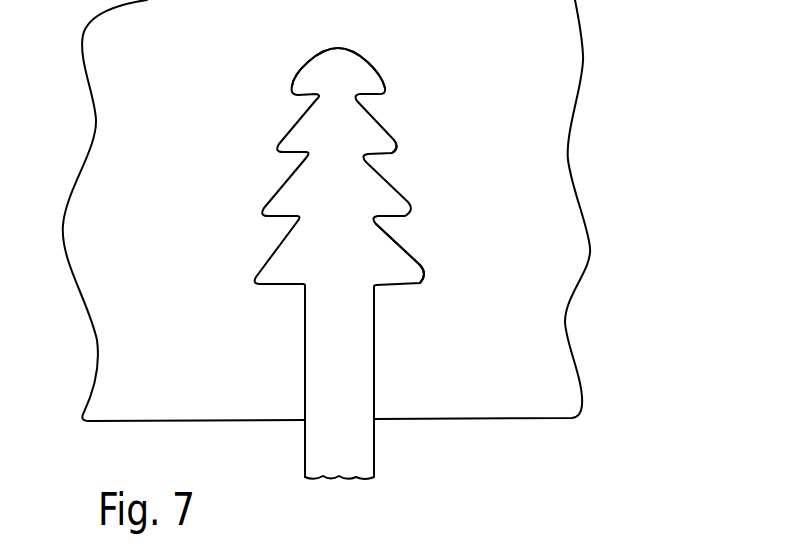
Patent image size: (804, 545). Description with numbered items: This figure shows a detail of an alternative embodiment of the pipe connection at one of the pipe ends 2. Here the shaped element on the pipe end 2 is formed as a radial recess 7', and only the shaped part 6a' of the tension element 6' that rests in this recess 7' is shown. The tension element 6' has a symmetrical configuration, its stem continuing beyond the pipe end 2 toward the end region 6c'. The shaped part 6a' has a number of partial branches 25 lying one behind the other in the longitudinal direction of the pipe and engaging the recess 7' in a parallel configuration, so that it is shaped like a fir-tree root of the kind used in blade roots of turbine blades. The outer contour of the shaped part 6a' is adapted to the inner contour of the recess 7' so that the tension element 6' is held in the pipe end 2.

The pipe end 2 is at (535, 40).
The radial recess 7' is at (364, 167).
The tension element 6' is at (373, 381).
The shaped part 6a' is at (430, 225).
The end portion of stem 6c' is at (378, 463).
The barb tips 25 is at (355, 72).